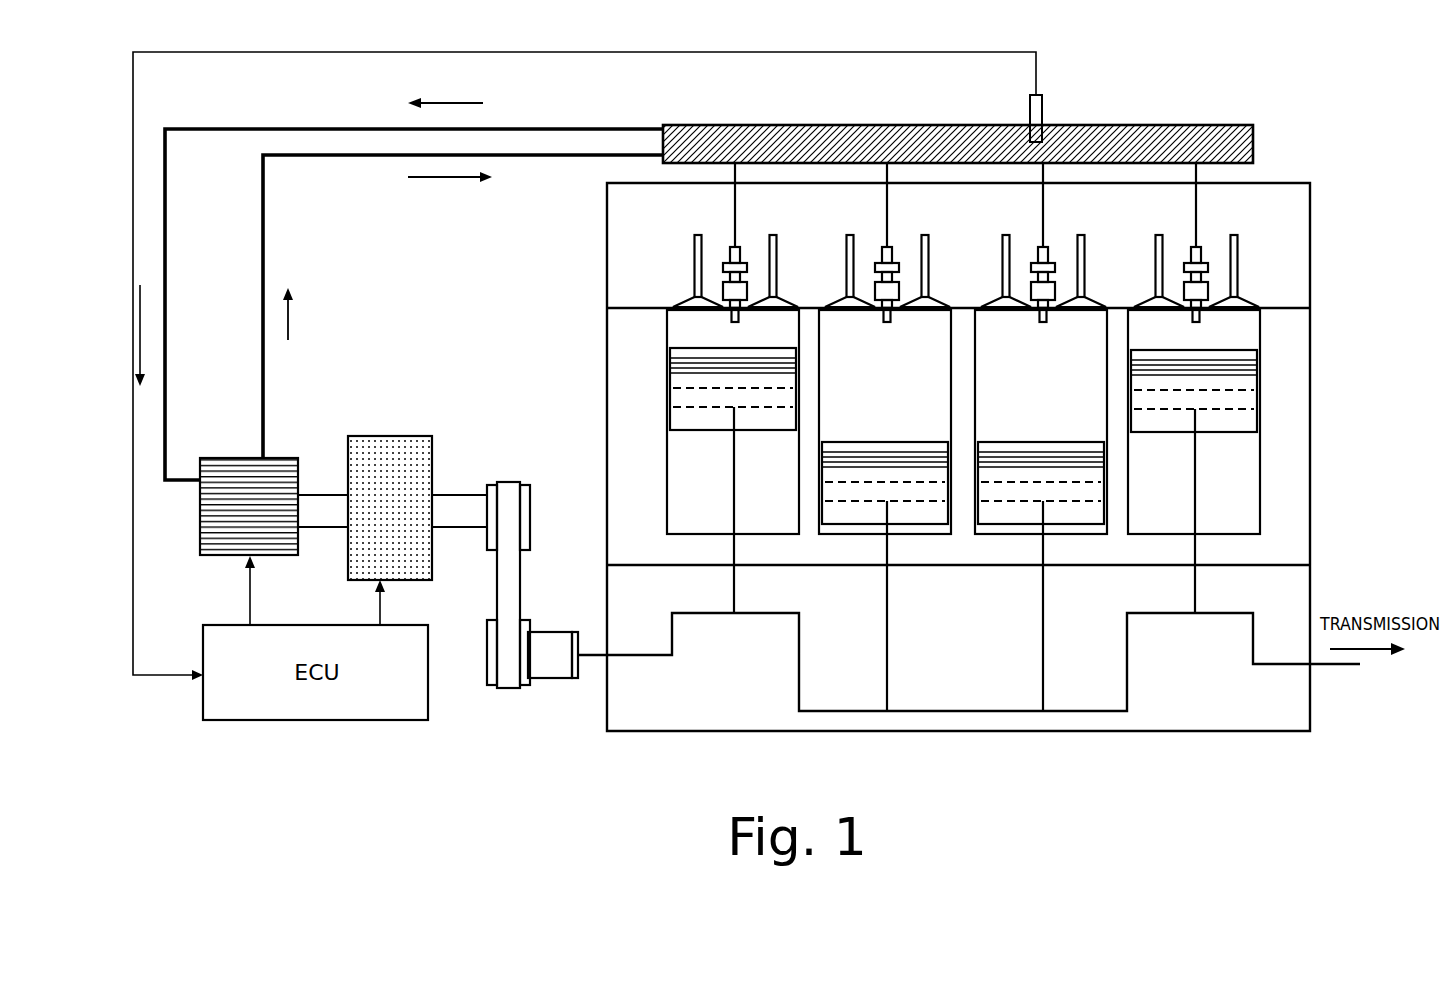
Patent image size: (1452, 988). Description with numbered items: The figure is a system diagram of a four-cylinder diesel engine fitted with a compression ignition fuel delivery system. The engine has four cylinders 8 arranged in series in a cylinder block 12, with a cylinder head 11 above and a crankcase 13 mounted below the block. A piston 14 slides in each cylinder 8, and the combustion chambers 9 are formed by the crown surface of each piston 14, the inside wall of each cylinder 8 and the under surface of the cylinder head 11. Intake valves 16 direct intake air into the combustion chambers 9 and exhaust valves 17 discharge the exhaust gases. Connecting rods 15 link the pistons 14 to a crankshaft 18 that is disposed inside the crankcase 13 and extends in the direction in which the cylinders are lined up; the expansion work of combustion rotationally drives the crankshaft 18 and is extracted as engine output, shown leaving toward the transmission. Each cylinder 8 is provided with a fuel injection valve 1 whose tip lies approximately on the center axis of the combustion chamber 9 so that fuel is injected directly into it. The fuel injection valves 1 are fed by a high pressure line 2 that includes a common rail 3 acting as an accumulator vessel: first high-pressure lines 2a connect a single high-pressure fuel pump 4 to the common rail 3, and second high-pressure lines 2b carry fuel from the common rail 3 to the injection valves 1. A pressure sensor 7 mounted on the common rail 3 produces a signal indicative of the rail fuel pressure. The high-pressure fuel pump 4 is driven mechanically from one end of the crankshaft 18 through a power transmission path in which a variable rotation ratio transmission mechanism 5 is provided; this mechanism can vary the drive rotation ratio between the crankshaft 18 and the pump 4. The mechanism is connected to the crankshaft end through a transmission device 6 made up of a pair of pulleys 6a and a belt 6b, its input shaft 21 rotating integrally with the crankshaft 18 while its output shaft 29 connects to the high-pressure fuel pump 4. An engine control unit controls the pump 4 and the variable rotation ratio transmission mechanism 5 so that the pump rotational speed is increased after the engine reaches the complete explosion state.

The fuel injection valve 1 is at (743, 255).
The high pressure line 2 is at (360, 237).
The first high-pressure line 2a is at (165, 223).
The second high-pressure line 2b is at (733, 207).
The common rail 3 is at (677, 123).
The high-pressure fuel pump 4 is at (243, 458).
The variable rotation ratio transmission mechanism 5 is at (372, 436).
The transmission device 6 is at (570, 420).
The pulley 6a is at (525, 617).
The belt 6b is at (508, 482).
The pressure sensor 7 is at (1047, 100).
The cylinder 8 is at (1263, 505).
The combustion chamber 9 is at (1249, 343).
The cylinder head 11 is at (1280, 230).
The cylinder block 12 is at (1292, 378).
The crankcase 13 is at (1278, 603).
The piston 14 is at (692, 388).
The connecting rod 15 is at (732, 510).
The intake valve 16 is at (688, 300).
The exhaust valve 17 is at (782, 300).
The crankshaft 18 is at (636, 657).
The input shaft 21 is at (448, 518).
The output shaft 29 is at (320, 520).